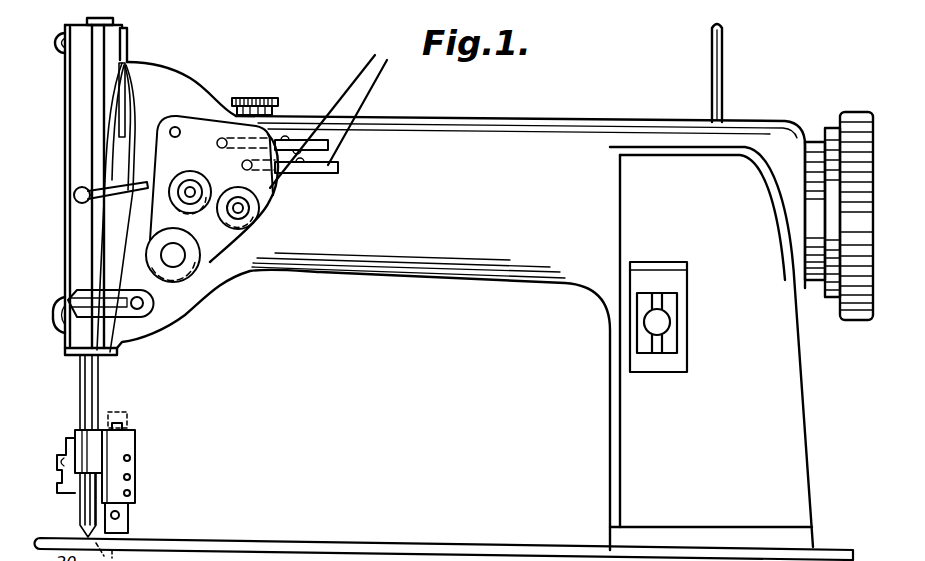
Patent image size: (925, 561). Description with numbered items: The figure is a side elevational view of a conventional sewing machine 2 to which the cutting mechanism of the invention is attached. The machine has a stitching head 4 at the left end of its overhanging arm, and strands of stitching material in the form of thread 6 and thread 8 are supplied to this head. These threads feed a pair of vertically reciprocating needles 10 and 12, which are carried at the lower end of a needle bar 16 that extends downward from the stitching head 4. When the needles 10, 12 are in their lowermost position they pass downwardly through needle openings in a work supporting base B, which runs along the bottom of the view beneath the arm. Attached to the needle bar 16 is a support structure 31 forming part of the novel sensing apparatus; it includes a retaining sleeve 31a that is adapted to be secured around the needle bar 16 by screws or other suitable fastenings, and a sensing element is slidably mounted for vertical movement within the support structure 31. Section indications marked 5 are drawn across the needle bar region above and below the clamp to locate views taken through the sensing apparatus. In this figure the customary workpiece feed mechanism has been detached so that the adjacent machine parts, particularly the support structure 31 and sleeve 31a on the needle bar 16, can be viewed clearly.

The sewing machine 2 is at (627, 418).
The stitching head 4 is at (174, 310).
The section line 5- 5 is at (142, 556).
The thread 6 is at (362, 80).
The thread 8 is at (378, 83).
The needle 10 is at (75, 495).
The needle 12 is at (100, 496).
The needle bar 16 is at (100, 395).
The support structure 31 is at (120, 450).
The retaining sleeve 31a is at (78, 441).
The work supporting base B is at (259, 540).